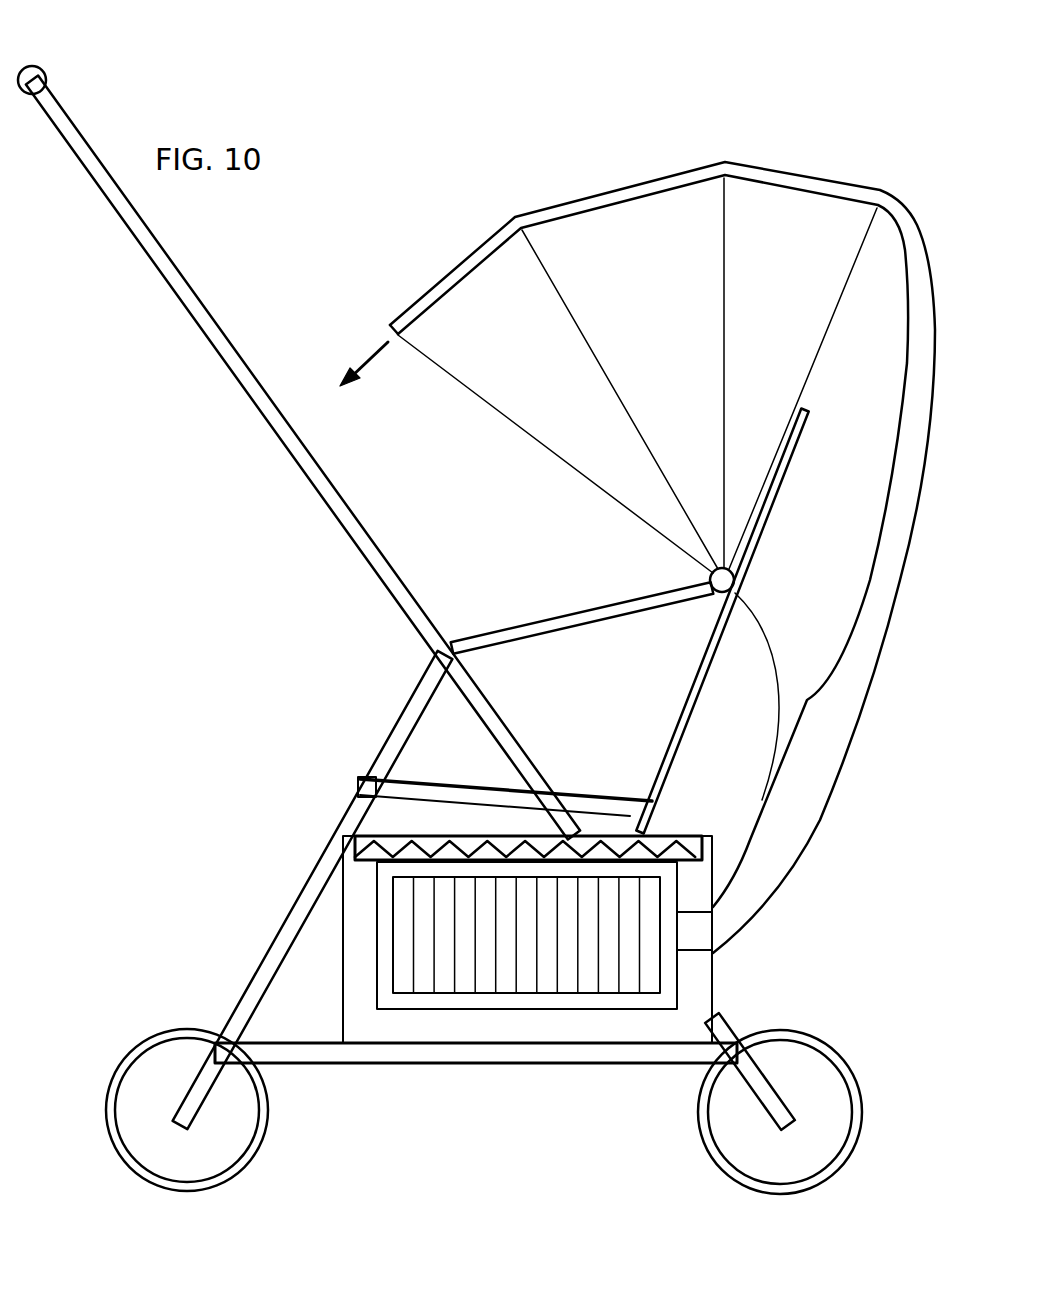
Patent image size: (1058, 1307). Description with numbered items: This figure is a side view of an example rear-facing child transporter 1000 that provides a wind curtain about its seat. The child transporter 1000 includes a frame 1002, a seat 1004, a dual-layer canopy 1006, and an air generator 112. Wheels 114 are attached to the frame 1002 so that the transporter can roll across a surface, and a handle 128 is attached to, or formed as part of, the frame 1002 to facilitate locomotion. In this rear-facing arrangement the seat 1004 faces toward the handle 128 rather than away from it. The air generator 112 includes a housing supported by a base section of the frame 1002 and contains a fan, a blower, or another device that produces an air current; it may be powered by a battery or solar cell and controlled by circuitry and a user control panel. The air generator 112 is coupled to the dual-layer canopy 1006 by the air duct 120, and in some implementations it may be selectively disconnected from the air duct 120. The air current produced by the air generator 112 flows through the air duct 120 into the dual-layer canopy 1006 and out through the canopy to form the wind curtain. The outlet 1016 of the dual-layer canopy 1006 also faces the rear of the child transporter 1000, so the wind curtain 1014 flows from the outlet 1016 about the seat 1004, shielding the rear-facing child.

The handle 128 is at (37, 67).
The child transporter 1000 is at (455, 212).
The dual-layer canopy 1006 is at (642, 186).
The air duct 120 is at (863, 727).
The outlet 1016 is at (394, 334).
The wind curtain 1014 is at (367, 352).
The frame 1002 is at (597, 608).
The seat 1004 is at (613, 798).
The air generator 112 is at (713, 986).
The wheels 114 is at (104, 1094).